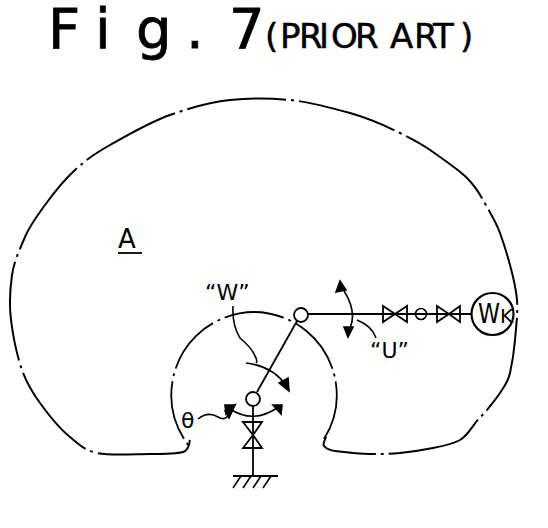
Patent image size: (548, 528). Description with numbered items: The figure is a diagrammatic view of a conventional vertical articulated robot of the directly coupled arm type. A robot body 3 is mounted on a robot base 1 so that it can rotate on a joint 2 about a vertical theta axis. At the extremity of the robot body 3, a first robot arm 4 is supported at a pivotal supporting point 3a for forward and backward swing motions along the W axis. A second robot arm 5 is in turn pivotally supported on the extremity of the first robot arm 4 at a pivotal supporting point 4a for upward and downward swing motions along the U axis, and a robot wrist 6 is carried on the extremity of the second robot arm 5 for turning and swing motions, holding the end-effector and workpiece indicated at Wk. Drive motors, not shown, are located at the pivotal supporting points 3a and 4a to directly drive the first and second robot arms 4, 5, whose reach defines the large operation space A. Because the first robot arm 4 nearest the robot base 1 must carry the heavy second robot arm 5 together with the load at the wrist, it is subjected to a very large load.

The robot base 1 is at (255, 456).
The joint 2 is at (243, 442).
The robot body 3 is at (271, 408).
The pivotal supporting point 3a is at (248, 392).
The first robot arm 4 is at (282, 350).
The pivotal supporting point 4a is at (300, 308).
The second robot arm 5 is at (373, 306).
The robot wrist 6 is at (464, 311).